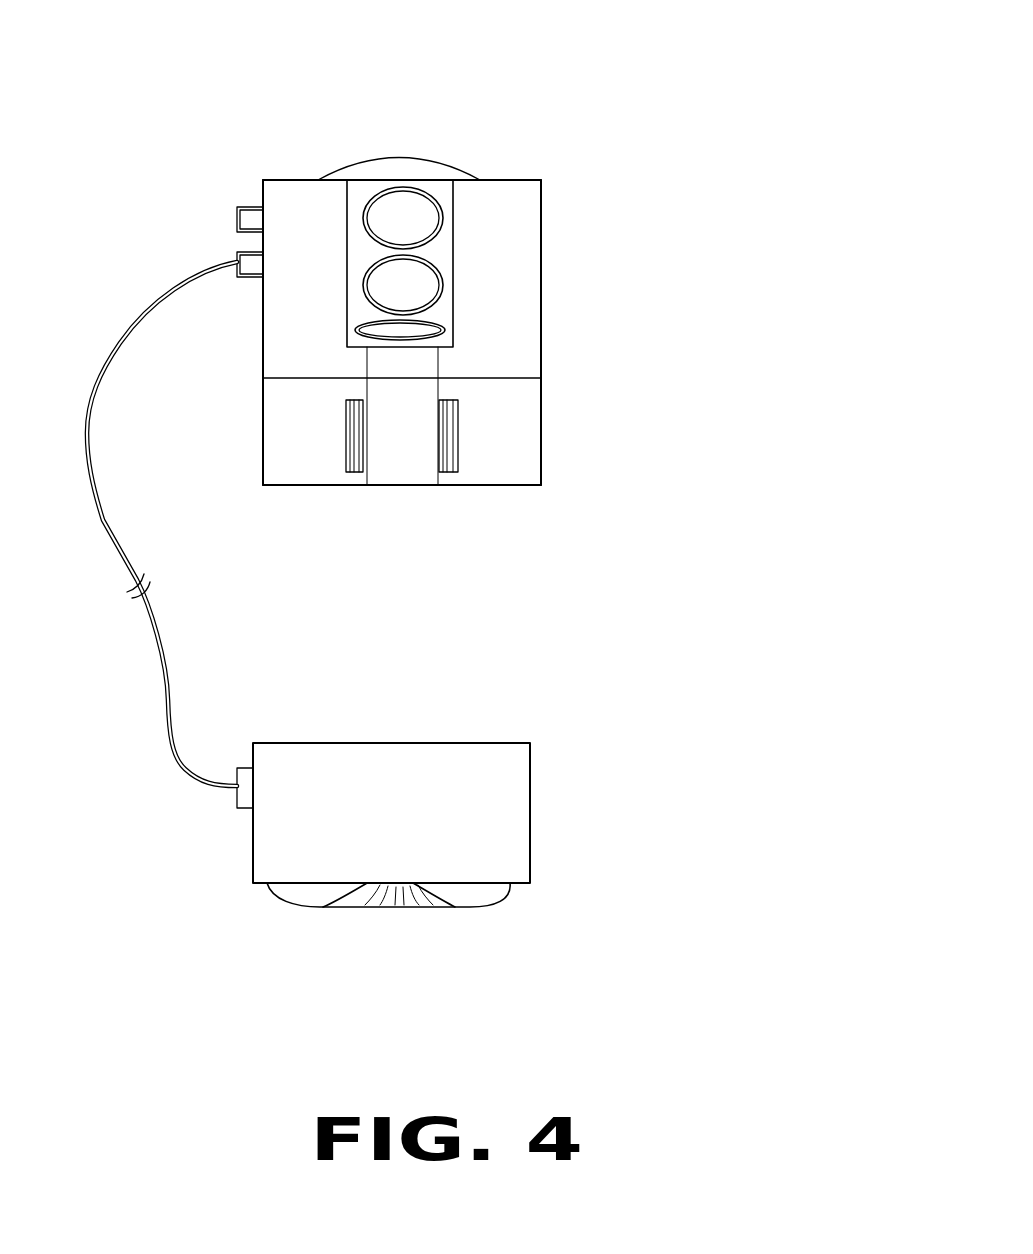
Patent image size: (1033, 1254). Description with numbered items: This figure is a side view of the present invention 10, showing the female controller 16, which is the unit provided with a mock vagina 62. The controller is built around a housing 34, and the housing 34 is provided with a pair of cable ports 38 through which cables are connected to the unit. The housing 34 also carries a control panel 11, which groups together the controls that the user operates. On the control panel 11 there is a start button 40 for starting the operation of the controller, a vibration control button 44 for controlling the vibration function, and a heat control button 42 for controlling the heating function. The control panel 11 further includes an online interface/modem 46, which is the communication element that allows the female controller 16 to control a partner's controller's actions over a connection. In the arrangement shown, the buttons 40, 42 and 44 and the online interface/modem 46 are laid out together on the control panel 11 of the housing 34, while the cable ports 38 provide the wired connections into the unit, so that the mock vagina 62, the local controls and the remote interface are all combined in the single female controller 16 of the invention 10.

The portable charging device 10 is at (666, 95).
The control panel 11 is at (356, 197).
The female controller 16 is at (538, 222).
The housing 34 is at (262, 465).
The cable ports 38 is at (237, 257).
The start button 40 is at (390, 328).
The heat control button 42 is at (397, 198).
The vibration control button 44 is at (418, 279).
The online interface/modem 46 is at (445, 162).
The mock vagina 62 is at (493, 852).